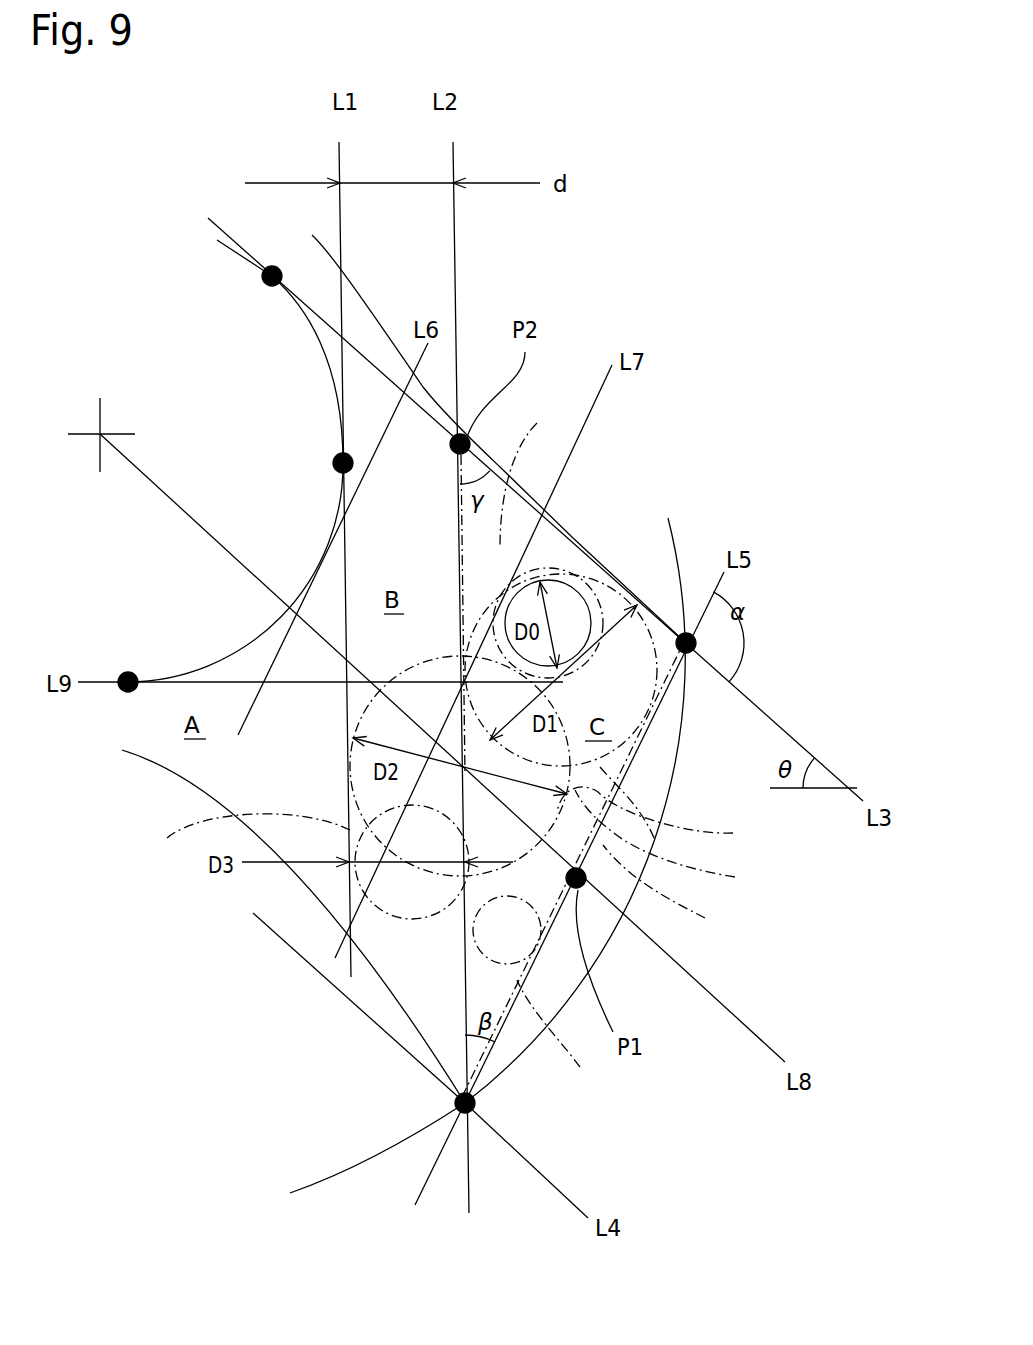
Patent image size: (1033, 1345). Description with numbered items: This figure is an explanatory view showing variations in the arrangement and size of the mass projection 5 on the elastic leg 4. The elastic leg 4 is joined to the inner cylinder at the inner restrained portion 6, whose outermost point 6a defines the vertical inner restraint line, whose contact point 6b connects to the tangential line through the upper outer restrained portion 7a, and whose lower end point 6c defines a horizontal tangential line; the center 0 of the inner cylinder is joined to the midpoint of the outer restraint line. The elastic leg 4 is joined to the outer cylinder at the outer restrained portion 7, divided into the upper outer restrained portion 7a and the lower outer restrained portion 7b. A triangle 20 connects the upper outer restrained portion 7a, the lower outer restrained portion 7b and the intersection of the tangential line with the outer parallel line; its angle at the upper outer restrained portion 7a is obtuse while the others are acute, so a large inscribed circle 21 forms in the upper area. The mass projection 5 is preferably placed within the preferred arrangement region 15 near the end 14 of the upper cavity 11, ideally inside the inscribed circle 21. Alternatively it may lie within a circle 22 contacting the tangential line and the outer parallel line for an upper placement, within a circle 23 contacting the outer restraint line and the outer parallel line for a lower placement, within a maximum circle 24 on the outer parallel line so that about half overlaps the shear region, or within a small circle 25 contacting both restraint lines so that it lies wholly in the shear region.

The center of inner cylinder 0 is at (99, 432).
The elastic leg 4 is at (228, 778).
The mass projection 5 is at (557, 610).
The inner restrained portion 6 is at (240, 647).
The outermost point of inner restrained portion 6a is at (342, 462).
The contact point on outer periphery of inner cylinder 6b is at (270, 279).
The lower end point of inner cylinder outer periphery 6c is at (129, 680).
The outer restrained portion 7 is at (303, 1187).
The upper outer restrained portion 7a is at (690, 648).
The lower outer restrained portion 7b is at (470, 1103).
The upper cavity 11 is at (440, 1073).
The end of upper cavity 14 is at (668, 590).
The preferred arrangement region 15 is at (620, 697).
The triangle 20 is at (673, 851).
The inscribed circle 21 is at (660, 817).
The circle contacting the straight line L3 and the outer parallel line 22 is at (528, 472).
The circle contacting the outer restraint line and the outer parallel line 23 is at (562, 1041).
The maximum circle 24 is at (670, 896).
The small circle 25 is at (241, 843).